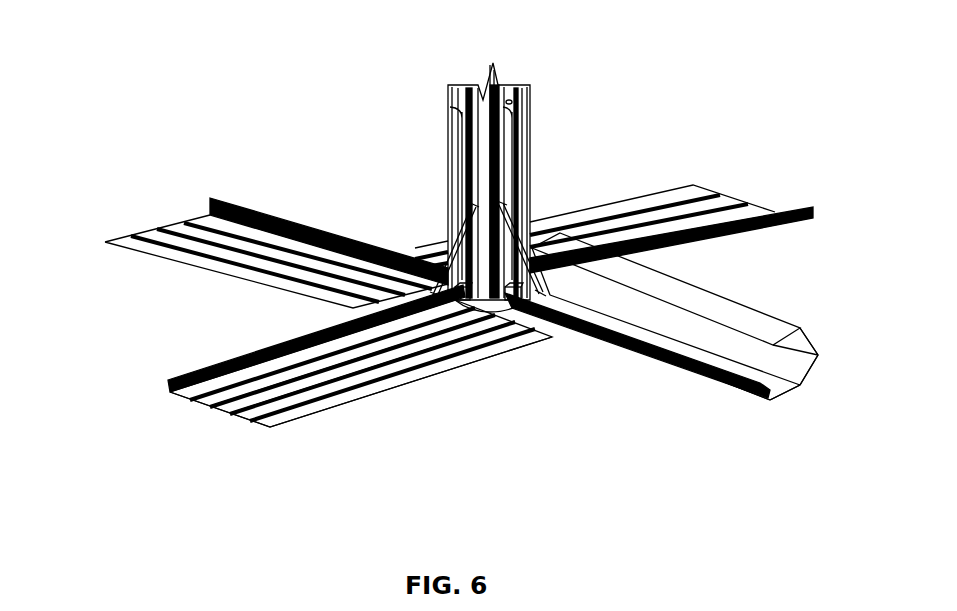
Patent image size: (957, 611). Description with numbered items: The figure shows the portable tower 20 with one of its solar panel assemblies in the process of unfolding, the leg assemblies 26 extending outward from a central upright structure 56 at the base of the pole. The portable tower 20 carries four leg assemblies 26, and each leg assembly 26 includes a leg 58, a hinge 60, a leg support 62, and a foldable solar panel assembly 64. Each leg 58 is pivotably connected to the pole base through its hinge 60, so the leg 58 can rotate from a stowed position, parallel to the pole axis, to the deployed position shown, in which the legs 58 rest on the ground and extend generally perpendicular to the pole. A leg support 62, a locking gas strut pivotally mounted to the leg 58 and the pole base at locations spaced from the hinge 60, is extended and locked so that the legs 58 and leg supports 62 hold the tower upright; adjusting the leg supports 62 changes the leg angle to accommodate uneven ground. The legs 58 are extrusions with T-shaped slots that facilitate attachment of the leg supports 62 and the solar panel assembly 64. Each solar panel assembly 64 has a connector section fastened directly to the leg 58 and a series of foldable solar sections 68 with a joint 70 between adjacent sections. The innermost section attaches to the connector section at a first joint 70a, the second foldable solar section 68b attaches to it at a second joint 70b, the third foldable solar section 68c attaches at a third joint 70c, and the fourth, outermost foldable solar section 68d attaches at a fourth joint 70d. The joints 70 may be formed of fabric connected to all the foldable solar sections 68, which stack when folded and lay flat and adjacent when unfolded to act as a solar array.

The portable tower 20 is at (158, 34).
The leg assembly 26 is at (148, 283).
The post columns 56 is at (448, 172).
The leg 58 is at (262, 200).
The hinge 60 is at (507, 300).
The leg support 62 is at (462, 236).
The foldable solar panel assembly 64 is at (802, 311).
The foldable solar section 68 is at (167, 397).
The second foldable solar section 68b is at (212, 407).
The third foldable solar section 68c is at (233, 415).
The fourth foldable solar section 68d is at (268, 428).
The joint 70 is at (773, 400).
The first joint 70a is at (657, 356).
The second joint 70b is at (803, 388).
The third joint 70c is at (820, 358).
The fourth joint 70d is at (807, 337).